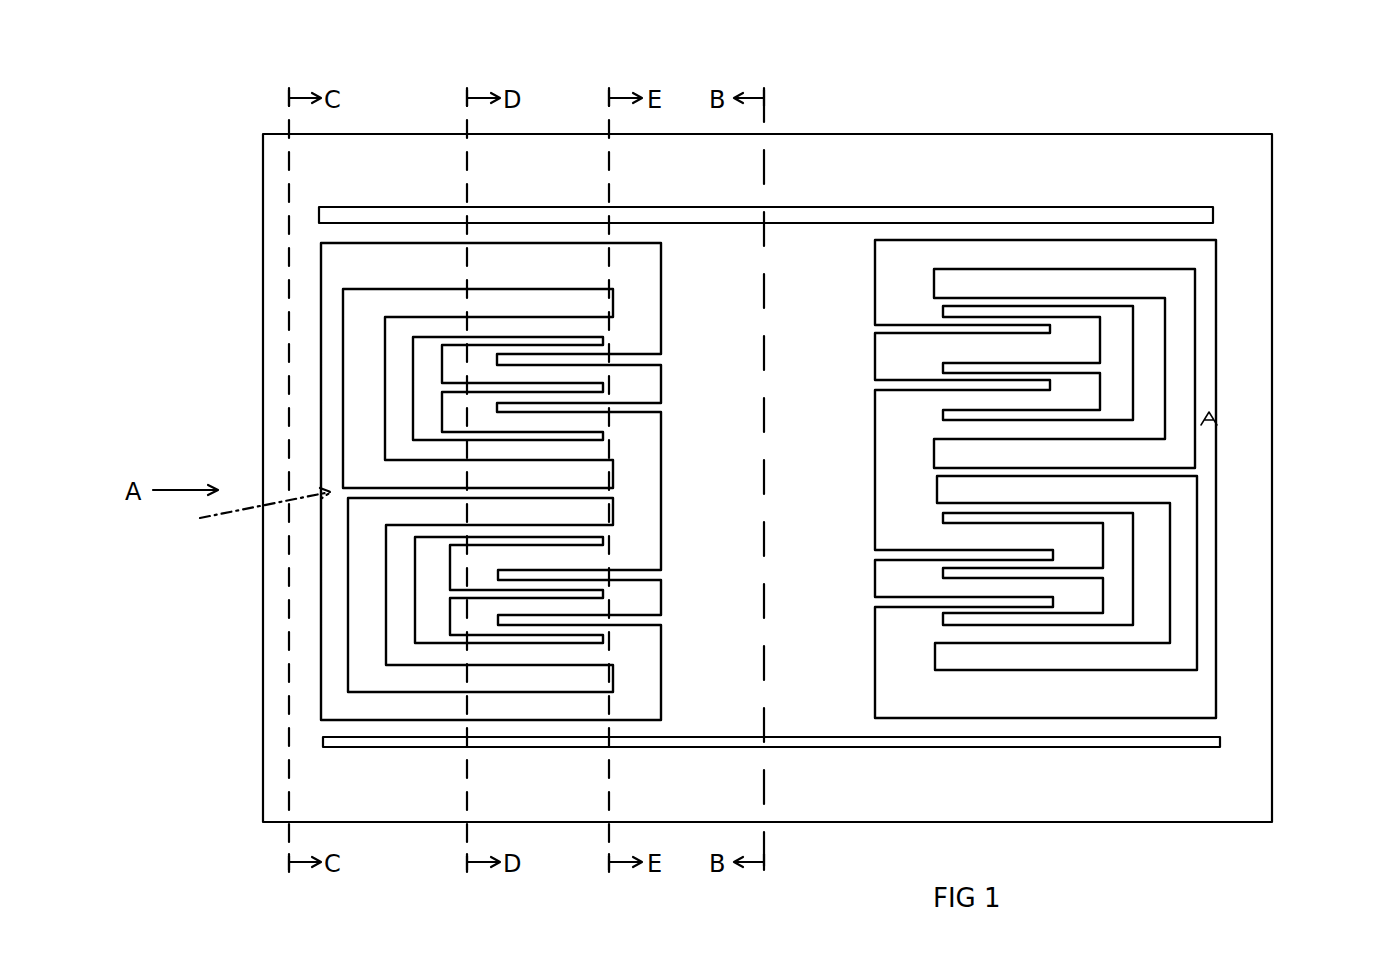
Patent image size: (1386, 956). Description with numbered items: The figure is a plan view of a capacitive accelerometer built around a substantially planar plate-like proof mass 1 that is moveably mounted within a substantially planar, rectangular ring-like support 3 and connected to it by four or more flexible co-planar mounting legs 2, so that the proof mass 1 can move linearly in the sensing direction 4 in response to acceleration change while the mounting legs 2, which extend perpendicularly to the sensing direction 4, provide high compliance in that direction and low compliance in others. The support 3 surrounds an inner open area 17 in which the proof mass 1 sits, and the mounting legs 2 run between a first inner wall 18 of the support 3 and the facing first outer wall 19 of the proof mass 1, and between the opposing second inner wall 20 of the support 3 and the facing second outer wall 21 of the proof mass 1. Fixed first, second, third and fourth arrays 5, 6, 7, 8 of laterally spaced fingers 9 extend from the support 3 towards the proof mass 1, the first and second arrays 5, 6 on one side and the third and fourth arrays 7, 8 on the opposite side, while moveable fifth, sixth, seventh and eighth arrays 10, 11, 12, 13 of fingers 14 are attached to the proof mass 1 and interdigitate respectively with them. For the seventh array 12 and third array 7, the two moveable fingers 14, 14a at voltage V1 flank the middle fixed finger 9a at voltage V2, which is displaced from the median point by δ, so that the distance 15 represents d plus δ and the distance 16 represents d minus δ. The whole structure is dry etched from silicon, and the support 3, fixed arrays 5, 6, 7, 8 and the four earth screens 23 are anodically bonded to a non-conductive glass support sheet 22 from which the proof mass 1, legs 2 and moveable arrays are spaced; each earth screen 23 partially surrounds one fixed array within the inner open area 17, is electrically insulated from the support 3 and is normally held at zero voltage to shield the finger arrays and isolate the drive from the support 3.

The proof mass 1 is at (725, 385).
The mounting legs 2 is at (363, 233).
The support 3 is at (264, 305).
The sensing direction 4 is at (783, 420).
The first array of fingers 5 is at (465, 406).
The second array of fingers 6 is at (470, 615).
The third array of fingers 7 is at (1098, 386).
The fourth array of fingers 8 is at (1098, 589).
The fixed fingers 9 is at (457, 352).
The middle finger 9a is at (1062, 362).
The fifth array of fingers 10 is at (629, 346).
The sixth array of fingers 11 is at (640, 642).
The seventh array of fingers 12 is at (911, 306).
The eighth array of fingers 13 is at (918, 625).
The moveable fingers 14 is at (631, 408).
The moveable finger 14a is at (917, 336).
The distance d+δ 15 is at (1011, 354).
The distance d−δ 16 is at (1023, 320).
The inner open area 17 is at (1320, 398).
The first inner wall 18 is at (320, 342).
The first outer wall 19 is at (662, 305).
The second inner wall 20 is at (1212, 476).
The second outer wall 21 is at (878, 657).
The support sheet 22 is at (333, 532).
The earth screen 23 is at (340, 403).